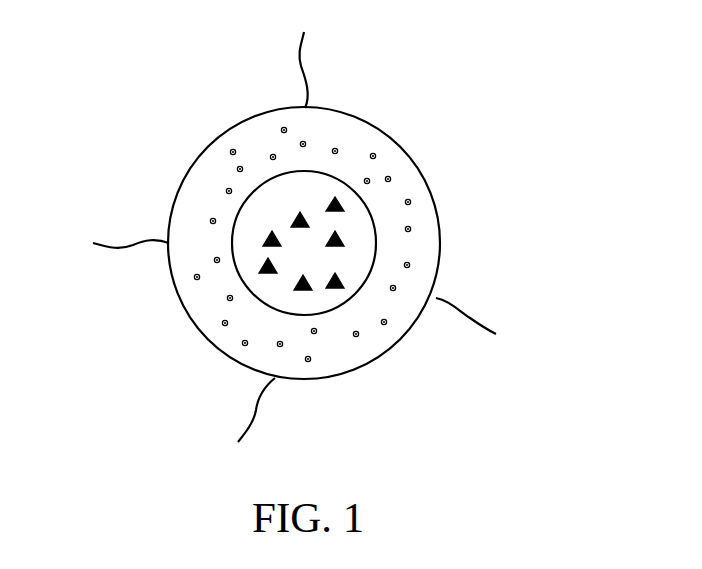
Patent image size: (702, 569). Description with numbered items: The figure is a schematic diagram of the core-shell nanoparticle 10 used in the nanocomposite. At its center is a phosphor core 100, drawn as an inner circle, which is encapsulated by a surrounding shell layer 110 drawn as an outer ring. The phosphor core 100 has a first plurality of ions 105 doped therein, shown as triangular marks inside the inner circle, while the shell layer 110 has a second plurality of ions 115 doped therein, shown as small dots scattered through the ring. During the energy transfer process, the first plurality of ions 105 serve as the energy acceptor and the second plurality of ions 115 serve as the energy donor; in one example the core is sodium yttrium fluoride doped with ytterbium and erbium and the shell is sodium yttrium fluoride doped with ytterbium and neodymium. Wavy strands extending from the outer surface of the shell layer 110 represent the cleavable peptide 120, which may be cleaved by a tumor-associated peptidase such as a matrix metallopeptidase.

The core-shell nanoparticle 10 is at (73, 68).
The phosphor core 100 is at (377, 244).
The first plurality of ions 105 is at (338, 202).
The shell layer 110 is at (337, 364).
The second plurality of ions 115 is at (358, 336).
The cleavable peptide 120 is at (487, 325).